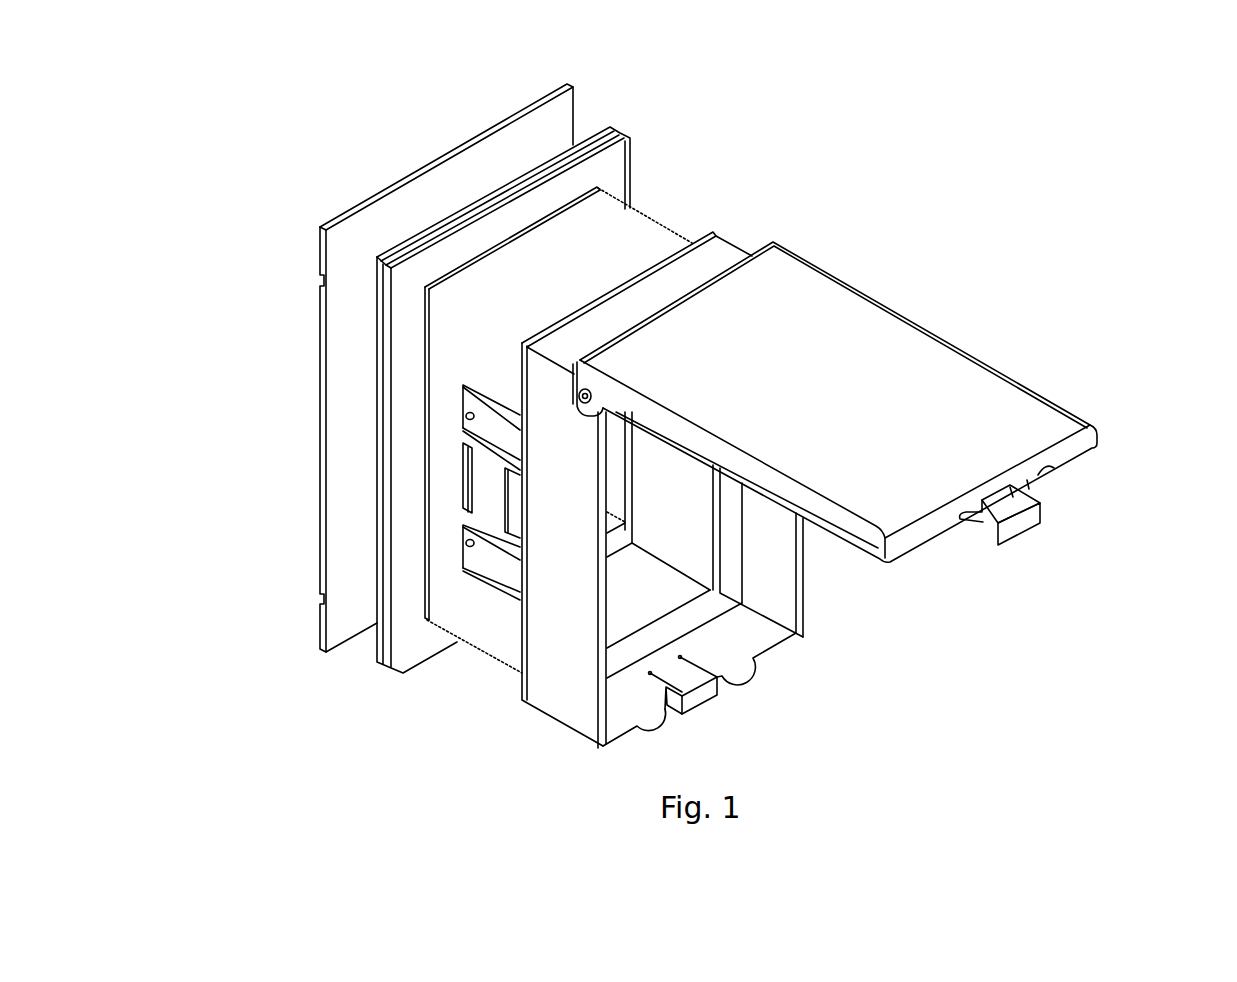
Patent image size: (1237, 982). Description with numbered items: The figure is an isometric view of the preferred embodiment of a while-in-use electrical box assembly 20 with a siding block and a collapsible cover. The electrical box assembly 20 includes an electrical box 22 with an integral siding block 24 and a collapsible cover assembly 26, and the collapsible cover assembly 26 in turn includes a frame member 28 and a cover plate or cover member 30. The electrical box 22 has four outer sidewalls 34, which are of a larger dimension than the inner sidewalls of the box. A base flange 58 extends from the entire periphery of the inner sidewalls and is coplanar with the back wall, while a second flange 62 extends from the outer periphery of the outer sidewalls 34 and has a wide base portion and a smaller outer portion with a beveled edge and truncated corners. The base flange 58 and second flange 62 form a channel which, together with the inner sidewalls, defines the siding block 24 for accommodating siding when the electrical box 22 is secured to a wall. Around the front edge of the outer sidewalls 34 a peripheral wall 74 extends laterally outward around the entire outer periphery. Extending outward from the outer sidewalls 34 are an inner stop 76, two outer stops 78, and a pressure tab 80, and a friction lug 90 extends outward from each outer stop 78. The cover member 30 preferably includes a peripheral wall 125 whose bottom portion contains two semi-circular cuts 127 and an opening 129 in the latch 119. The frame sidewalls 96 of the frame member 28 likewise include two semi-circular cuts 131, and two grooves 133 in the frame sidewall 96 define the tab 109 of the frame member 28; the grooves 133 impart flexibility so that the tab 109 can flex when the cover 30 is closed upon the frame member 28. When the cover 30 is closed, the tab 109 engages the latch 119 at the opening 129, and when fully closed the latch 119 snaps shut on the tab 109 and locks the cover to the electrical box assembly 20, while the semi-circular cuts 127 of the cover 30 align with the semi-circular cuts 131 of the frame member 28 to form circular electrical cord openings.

The electrical box assembly 20 is at (266, 234).
The electrical box 22 is at (648, 212).
The siding block 24 is at (372, 590).
The collapsible cover assembly 26 is at (915, 294).
The frame member 28 is at (739, 241).
The cover member 30 is at (835, 402).
The outer sidewalls 34 is at (501, 426).
The base flange 58 is at (573, 85).
The second flange 62 is at (628, 137).
The peripheral wall 74 is at (597, 666).
The inner stop 76 is at (466, 475).
The outer stops 78 is at (487, 426).
The pressure tab 80 is at (514, 507).
The friction lug 90 is at (468, 543).
The frame sidewalls 96 is at (644, 531).
The tab 109 is at (703, 703).
The latch 119 is at (1022, 532).
The peripheral wall 125 is at (1082, 452).
The semi-circular cuts 127 is at (1040, 478).
The opening 129 is at (990, 527).
The semi-circular cuts 131 is at (733, 662).
The grooves 133 is at (667, 685).